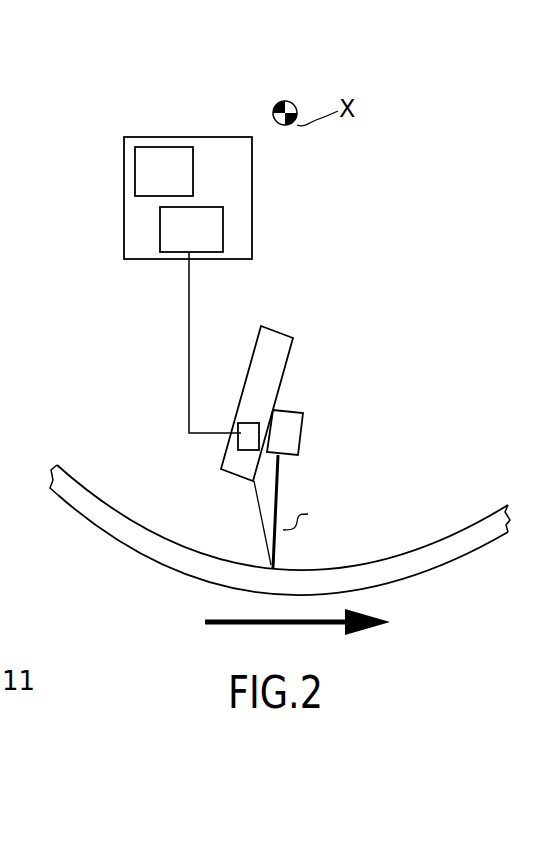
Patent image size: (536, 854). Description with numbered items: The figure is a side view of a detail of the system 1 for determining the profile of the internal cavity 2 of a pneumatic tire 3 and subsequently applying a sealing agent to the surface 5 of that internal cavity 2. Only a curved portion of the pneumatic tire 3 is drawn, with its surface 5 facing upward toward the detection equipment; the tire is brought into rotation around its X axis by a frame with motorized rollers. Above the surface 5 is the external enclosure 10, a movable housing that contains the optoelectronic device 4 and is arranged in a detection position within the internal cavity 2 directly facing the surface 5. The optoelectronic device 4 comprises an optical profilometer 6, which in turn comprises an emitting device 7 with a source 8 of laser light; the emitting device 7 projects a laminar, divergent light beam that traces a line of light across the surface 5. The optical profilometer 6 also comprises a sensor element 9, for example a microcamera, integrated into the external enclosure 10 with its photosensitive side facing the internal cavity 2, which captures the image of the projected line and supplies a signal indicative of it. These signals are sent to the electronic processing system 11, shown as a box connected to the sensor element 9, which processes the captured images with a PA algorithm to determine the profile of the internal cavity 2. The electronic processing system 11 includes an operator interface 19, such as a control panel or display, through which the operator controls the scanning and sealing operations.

The system 1 is at (367, 240).
The internal cavity 2 is at (137, 430).
The pneumatic tire 3 is at (262, 493).
The optoelectronic device 4 is at (346, 386).
The surface 5 is at (80, 477).
The optical profilometer 6 is at (314, 435).
The emitting device 7 is at (296, 442).
The source of laser light 8 is at (285, 415).
The sensor element 9 is at (243, 442).
The external enclosure 10 is at (273, 335).
The electronic processing system 11 is at (188, 232).
The operator interface 19 is at (164, 171).